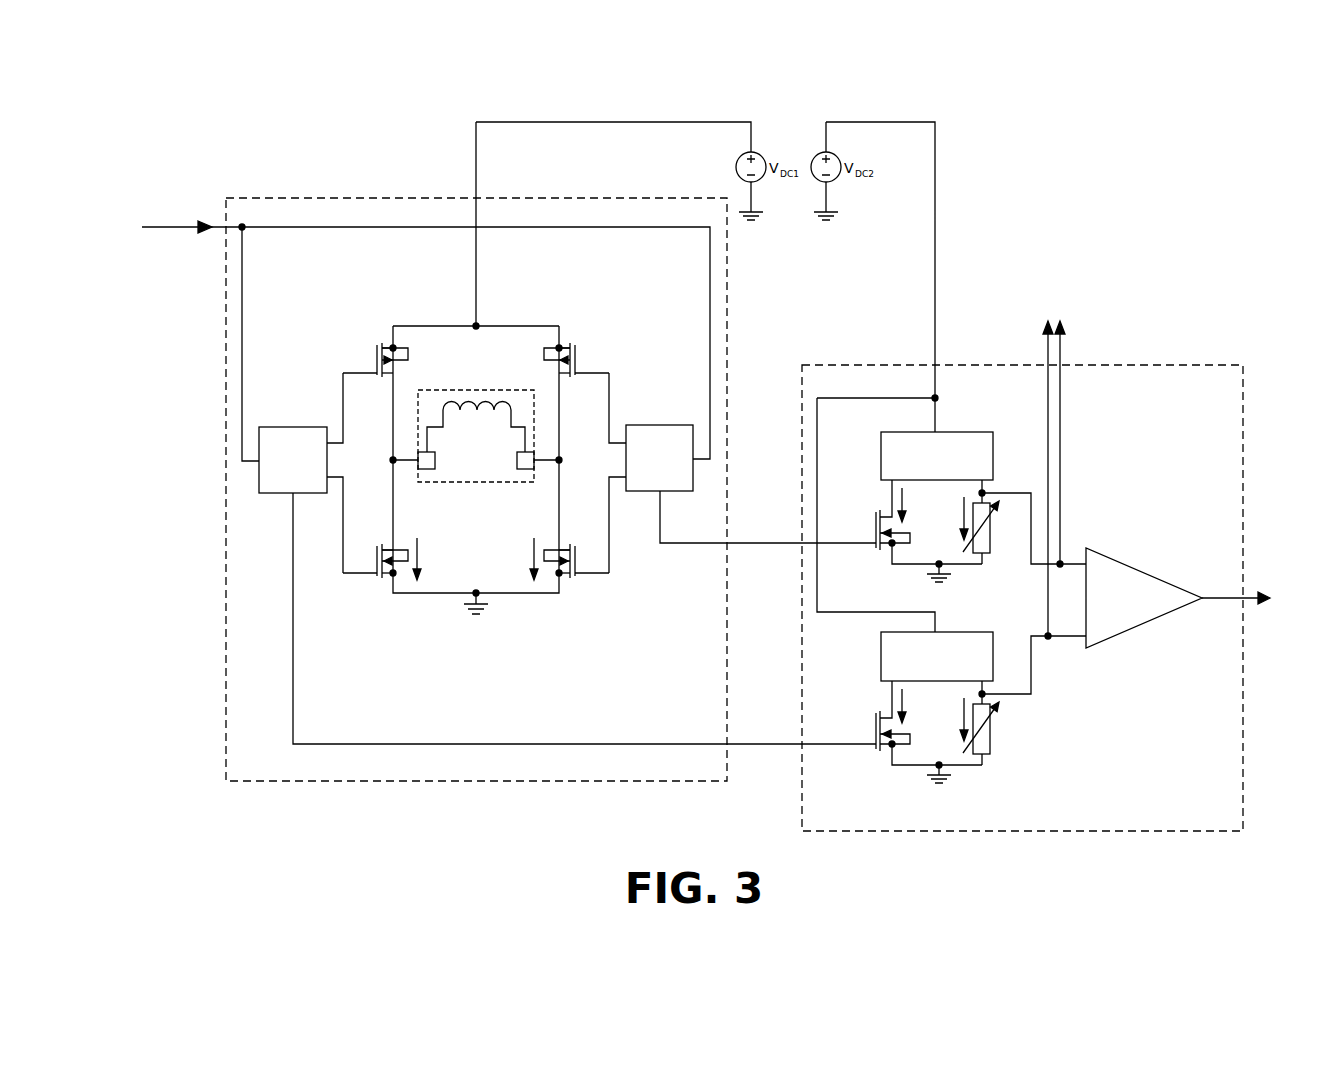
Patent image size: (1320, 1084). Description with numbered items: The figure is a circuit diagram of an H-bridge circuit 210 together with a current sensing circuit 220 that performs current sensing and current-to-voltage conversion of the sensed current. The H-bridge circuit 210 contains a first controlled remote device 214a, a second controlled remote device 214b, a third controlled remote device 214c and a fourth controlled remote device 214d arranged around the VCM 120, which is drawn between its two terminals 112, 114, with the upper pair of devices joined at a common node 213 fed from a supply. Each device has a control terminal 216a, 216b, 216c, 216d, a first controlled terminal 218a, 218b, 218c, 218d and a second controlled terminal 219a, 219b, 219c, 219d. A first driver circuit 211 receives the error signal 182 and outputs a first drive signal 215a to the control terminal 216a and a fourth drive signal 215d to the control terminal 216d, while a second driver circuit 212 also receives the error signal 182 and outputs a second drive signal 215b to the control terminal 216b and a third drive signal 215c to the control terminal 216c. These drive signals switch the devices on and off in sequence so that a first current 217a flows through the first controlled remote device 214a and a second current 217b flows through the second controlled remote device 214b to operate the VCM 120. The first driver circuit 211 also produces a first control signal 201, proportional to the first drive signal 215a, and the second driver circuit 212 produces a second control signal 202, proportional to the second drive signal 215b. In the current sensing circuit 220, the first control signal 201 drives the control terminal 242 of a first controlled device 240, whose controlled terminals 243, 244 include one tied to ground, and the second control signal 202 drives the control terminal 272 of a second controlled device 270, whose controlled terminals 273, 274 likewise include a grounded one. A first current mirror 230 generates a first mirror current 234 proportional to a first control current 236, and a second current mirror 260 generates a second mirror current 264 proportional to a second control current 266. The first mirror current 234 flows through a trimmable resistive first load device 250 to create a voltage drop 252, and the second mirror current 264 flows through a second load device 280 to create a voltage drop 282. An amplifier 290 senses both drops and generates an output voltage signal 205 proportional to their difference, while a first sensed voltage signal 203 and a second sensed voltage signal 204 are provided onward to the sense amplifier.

The error signal 182 is at (205, 238).
The first control signal 201 is at (764, 756).
The second control signal 202 is at (764, 555).
The first sensed voltage signal 203 is at (1046, 352).
The second sensed voltage signal 204 is at (1062, 352).
The output voltage signal 205 is at (1226, 598).
The H-bridge circuit 210 is at (300, 198).
The first driver circuit 211 is at (270, 494).
The second driver circuit 212 is at (688, 491).
The supply node 213 is at (440, 318).
The first controlled remote device 214a is at (357, 574).
The second controlled remote device 214b is at (595, 574).
The third controlled remote device 214c is at (608, 359).
The fourth controlled remote device 214d is at (341, 356).
The first drive signal 215a is at (343, 494).
The second drive signal 215b is at (609, 494).
The third drive signal 215c is at (609, 428).
The fourth drive signal 215d is at (343, 428).
The first control terminal 216a is at (362, 573).
The first control terminal 216b is at (590, 573).
The first control terminal 216c is at (580, 370).
The first control terminal 216d is at (372, 370).
The first current 217a is at (419, 560).
The second current 217b is at (533, 560).
The first controlled terminal 218a is at (374, 547).
The first controlled terminal 218b is at (577, 547).
The first controlled terminal 218c is at (567, 344).
The first controlled terminal 218d is at (386, 344).
The second controlled terminal 219a is at (389, 586).
The second controlled terminal 219b is at (563, 586).
The second controlled terminal 219c is at (574, 378).
The second controlled terminal 219d is at (386, 378).
The current sensing circuit 220 is at (820, 365).
The first current mirror 230 is at (937, 636).
The first mirror current 234 is at (960, 725).
The first control current 236 is at (906, 697).
The first controlled device 240 is at (900, 744).
The first control terminal 242 is at (868, 744).
The first controlled terminal 243 is at (882, 717).
The second control terminal 244 is at (890, 755).
The first load device 250 is at (988, 754).
The voltage drop 252 is at (1031, 698).
The second current mirror 260 is at (952, 432).
The second mirror current 264 is at (960, 524).
The second control current 266 is at (906, 496).
The second controlled device 270 is at (903, 541).
The first control terminal 272 is at (868, 543).
The first controlled terminal 273 is at (882, 516).
The second control terminal 274 is at (889, 554).
The second load device 280 is at (988, 553).
The voltage drop 282 is at (990, 493).
The amplifier 290 is at (1140, 562).
The first coil terminal 112 is at (430, 470).
The second coil terminal 114 is at (522, 470).
The VCM 120 is at (478, 412).